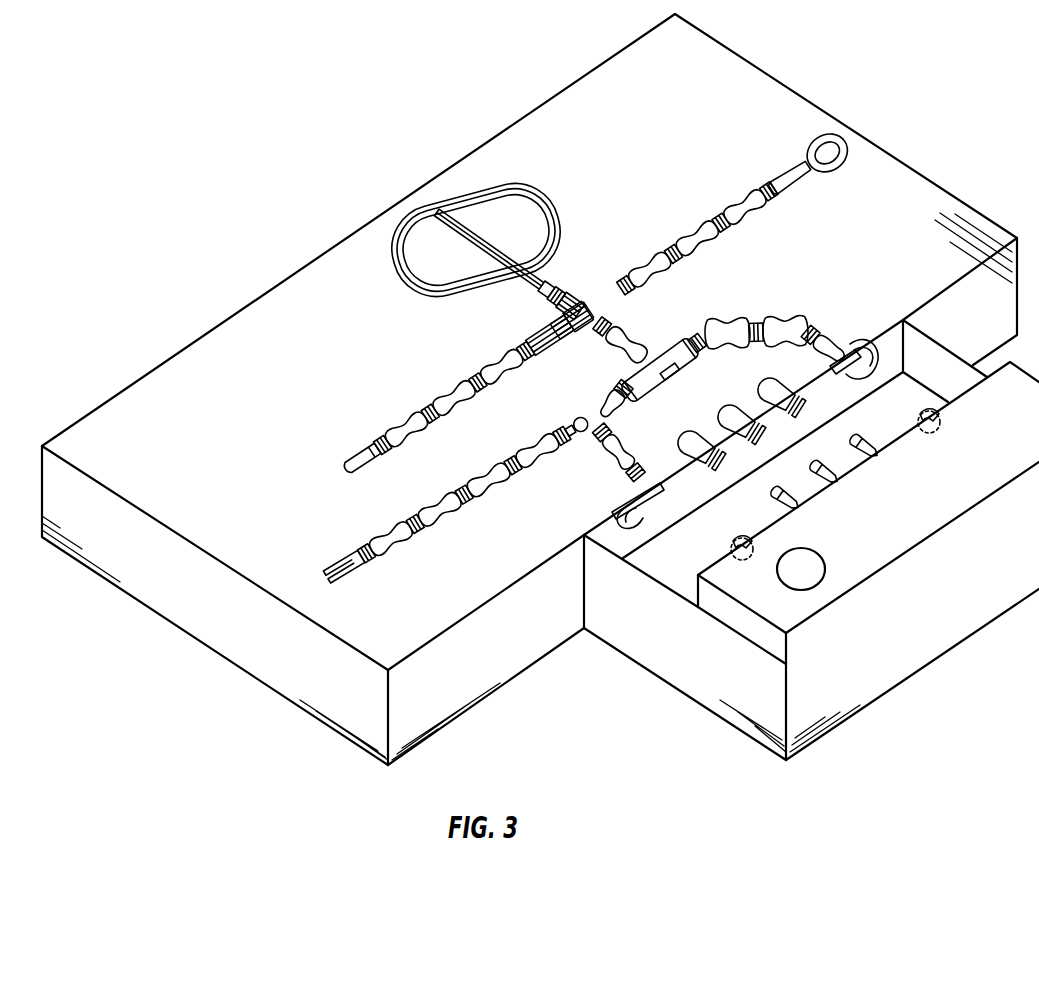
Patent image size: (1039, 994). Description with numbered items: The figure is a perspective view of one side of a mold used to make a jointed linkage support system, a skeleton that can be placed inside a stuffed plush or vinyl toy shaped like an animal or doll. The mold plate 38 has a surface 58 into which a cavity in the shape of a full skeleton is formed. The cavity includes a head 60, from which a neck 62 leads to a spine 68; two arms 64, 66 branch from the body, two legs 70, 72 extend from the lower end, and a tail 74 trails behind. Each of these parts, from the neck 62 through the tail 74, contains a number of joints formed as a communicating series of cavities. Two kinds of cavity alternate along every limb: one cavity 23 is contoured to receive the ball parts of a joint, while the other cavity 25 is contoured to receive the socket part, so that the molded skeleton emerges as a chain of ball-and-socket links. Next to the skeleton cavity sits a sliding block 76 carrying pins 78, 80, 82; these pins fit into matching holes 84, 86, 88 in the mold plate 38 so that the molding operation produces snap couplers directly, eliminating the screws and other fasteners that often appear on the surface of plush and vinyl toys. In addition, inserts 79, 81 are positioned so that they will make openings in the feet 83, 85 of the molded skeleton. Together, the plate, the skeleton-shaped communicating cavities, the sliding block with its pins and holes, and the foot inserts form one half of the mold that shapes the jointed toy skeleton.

The cavity 23 is at (683, 257).
The cavity 25 is at (690, 223).
The mold plate 38 is at (804, 413).
The surface 58 is at (913, 269).
The head 60 is at (568, 194).
The neck 62 is at (574, 280).
The arm 64 is at (427, 402).
The arm 66 is at (727, 207).
The spine 68 is at (640, 325).
The leg 70 is at (631, 438).
The leg 72 is at (776, 348).
The tail 74 is at (477, 544).
The sliding block 76 is at (896, 511).
The pin 78 is at (778, 494).
The insert 79 is at (733, 538).
The pin 80 is at (817, 468).
The insert 81 is at (927, 415).
The pin 82 is at (857, 441).
The foot 83 is at (621, 503).
The hole 84 is at (708, 473).
The foot 85 is at (857, 345).
The hole 86 is at (753, 445).
The hole 88 is at (790, 417).